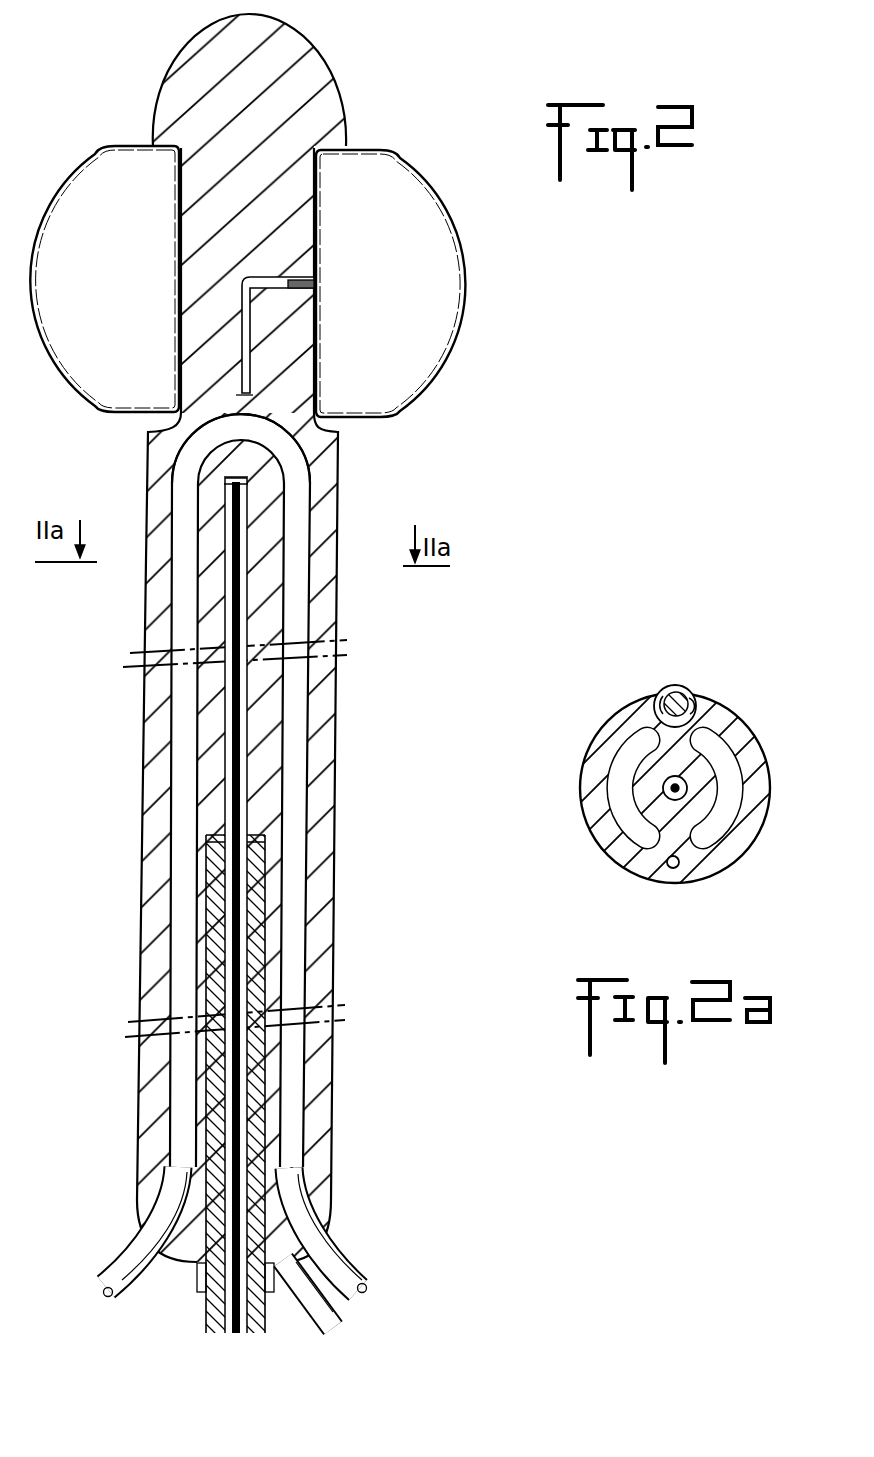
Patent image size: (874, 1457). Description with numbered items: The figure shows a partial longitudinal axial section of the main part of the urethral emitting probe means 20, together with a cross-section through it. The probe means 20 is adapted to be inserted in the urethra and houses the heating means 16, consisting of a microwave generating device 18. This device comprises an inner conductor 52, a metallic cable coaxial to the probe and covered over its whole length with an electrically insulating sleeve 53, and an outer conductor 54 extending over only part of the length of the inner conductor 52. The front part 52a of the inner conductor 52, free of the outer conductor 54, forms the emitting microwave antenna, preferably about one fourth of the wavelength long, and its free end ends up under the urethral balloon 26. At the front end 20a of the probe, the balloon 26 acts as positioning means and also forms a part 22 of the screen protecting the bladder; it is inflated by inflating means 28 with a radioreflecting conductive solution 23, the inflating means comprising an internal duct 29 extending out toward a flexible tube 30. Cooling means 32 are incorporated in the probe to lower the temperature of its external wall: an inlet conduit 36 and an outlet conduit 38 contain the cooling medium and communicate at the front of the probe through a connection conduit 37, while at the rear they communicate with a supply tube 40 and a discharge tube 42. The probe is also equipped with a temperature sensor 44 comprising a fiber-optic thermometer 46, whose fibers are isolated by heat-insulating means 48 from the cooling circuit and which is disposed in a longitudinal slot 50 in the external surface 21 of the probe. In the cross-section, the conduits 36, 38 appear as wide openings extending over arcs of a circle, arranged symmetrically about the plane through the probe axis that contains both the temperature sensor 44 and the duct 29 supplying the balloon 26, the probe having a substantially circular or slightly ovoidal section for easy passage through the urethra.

In FIG. 2, the heating means 16 is at (227, 772).
In FIG. 2, the microwave generating device 18 is at (250, 621).
In FIG. 2, the emitting probe means 20 is at (125, 497).
In FIG. 2A, the emitting probe means 20 is at (577, 752).
In FIG. 2, the front end 20a is at (192, 53).
In FIG. 2, the external surface 21 is at (145, 580).
In FIG. 2, the part of the screen forming means 22 is at (460, 213).
In FIG. 2, the radioreflecting conductive solution 23 is at (62, 212).
In FIG. 2, the urethral balloon 26 is at (457, 350).
In FIG. 2, the inflating means 28 is at (227, 322).
In FIG. 2, the internal duct 29 is at (272, 278).
In FIG. 2A, the internal duct 29 is at (672, 868).
In FIG. 2, the flexible tube 30 is at (307, 1307).
In FIG. 2, the cooling means 32 is at (293, 478).
In FIG. 2, the inlet conduit 36 is at (292, 880).
In FIG. 2A, the inlet conduit 36 is at (720, 820).
In FIG. 2, the connection conduit 37 is at (237, 427).
In FIG. 2, the outlet conduit 38 is at (185, 850).
In FIG. 2A, the outlet conduit 38 is at (598, 833).
In FIG. 2, the supply tube 40 is at (352, 1263).
In FIG. 2, the discharge tube 42 is at (118, 1268).
In FIG. 2A, the temperature sensor 44 is at (653, 683).
In FIG. 2A, the fiber-optic thermometer 46 is at (670, 693).
In FIG. 2A, the heat-insulating means 48 is at (693, 697).
In FIG. 2A, the longitudinal slot 50 is at (657, 695).
In FIG. 2, the inner conductor 52 is at (230, 1067).
In FIG. 2A, the inner conductor 52 is at (683, 783).
In FIG. 2, the front part of the inner conductor 52a is at (252, 500).
In FIG. 2, the electrically insulating sleeve 53 is at (227, 943).
In FIG. 2, the outer conductor 54 is at (214, 1128).